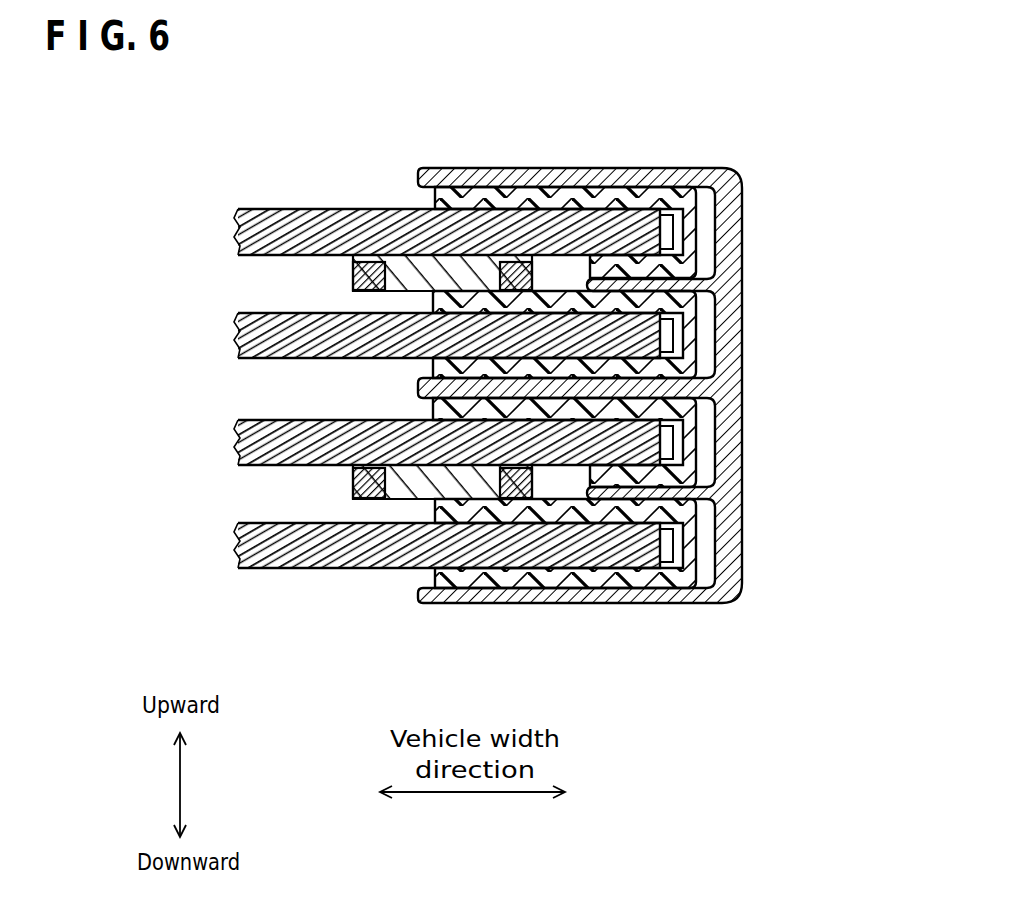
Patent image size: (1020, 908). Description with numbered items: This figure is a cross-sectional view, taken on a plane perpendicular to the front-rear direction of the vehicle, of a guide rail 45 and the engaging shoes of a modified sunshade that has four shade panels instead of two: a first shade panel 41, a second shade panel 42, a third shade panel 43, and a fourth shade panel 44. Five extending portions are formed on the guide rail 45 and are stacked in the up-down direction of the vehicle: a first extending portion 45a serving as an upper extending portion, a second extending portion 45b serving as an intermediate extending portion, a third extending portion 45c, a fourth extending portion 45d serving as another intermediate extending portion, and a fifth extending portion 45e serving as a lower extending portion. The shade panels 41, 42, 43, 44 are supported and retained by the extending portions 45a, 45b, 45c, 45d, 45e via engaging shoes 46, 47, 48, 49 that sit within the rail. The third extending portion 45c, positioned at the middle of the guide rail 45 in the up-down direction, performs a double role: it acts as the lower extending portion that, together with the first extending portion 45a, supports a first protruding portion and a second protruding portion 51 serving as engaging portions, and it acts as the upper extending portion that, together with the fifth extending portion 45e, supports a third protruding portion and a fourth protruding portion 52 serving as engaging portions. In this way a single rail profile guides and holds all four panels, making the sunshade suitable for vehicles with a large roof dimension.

The first shade panel 41 is at (245, 233).
The second shade panel 42 is at (250, 342).
The third shade panel 43 is at (250, 448).
The fourth shade panel 44 is at (250, 551).
The guide rail 45 is at (676, 138).
The first extending portion 45a is at (487, 170).
The second extending portion 45b is at (716, 264).
The third extending portion 45c is at (682, 374).
The fourth extending portion 45d is at (688, 483).
The fifth extending portion 45e is at (480, 596).
The engaging shoe 46 is at (685, 232).
The engaging shoe 47 is at (683, 352).
The engaging shoe 48 is at (683, 450).
The engaging shoe 49 is at (683, 558).
The second protruding portion 51 is at (422, 270).
The fourth protruding portion 52 is at (430, 478).